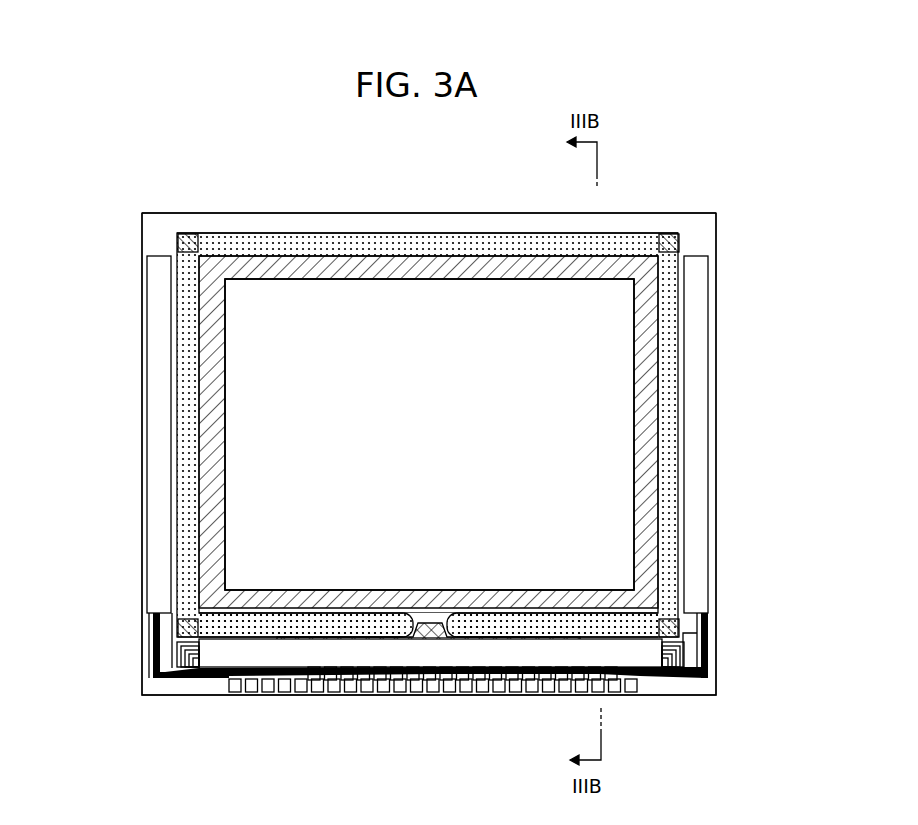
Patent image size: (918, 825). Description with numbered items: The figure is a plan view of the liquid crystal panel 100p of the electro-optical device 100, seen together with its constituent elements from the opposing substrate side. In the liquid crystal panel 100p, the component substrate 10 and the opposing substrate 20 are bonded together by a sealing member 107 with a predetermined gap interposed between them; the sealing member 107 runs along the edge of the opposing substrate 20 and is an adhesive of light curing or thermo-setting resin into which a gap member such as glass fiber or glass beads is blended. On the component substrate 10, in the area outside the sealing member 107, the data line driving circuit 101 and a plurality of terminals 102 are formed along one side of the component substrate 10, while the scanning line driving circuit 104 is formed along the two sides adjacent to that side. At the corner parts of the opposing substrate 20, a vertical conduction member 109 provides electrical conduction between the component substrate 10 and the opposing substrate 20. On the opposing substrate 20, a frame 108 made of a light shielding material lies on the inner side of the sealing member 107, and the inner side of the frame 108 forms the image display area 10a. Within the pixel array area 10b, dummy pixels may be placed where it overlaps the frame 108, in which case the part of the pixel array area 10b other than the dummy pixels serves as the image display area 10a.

The electro-optical device 100 is at (682, 100).
The liquid crystal panel 100p is at (650, 205).
The component substrate 10 is at (497, 213).
The opposing substrate 20 is at (528, 233).
The image display area 10a is at (303, 451).
The pixel array area 10b is at (429, 434).
The scanning line driving circuit 104 is at (697, 495).
The sealing member 107 is at (672, 412).
The frame 108 is at (645, 335).
The vertical conduction member 109 is at (177, 234).
The data line driving circuit 101 is at (645, 655).
The terminals 102 is at (442, 684).